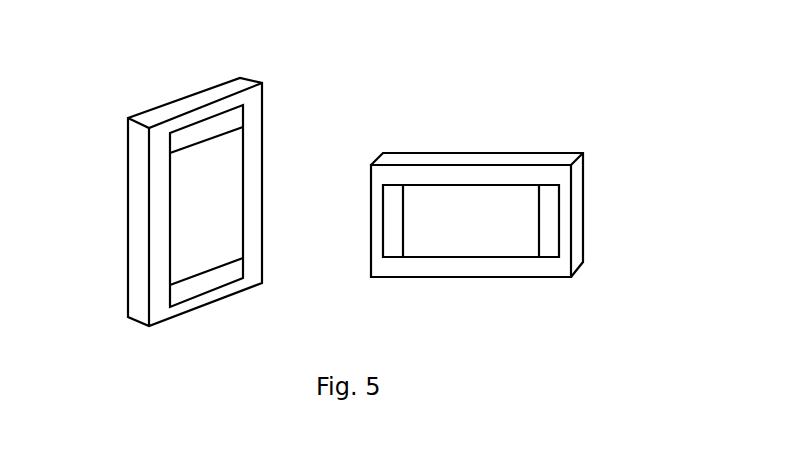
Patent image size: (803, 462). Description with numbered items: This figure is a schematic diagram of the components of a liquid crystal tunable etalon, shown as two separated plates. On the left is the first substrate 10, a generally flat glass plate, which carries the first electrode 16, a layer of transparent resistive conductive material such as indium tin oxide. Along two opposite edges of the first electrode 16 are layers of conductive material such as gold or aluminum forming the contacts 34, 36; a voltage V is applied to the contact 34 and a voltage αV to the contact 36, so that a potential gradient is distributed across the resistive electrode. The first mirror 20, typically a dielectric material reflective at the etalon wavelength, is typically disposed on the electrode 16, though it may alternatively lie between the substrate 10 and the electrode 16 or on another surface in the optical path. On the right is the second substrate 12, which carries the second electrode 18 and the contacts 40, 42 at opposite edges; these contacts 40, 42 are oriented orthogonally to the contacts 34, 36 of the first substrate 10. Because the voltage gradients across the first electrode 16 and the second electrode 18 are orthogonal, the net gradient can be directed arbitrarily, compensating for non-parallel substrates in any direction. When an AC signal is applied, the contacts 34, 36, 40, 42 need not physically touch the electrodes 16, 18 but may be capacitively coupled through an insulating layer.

The first substrate 10 is at (240, 82).
The second substrate 12 is at (577, 223).
The first electrode 16 is at (267, 83).
The second electrode 18 is at (572, 278).
The first mirror 20 is at (183, 197).
The contact 34 is at (188, 136).
The contact 36 is at (185, 288).
The contact 40 is at (390, 193).
The contact 42 is at (543, 190).